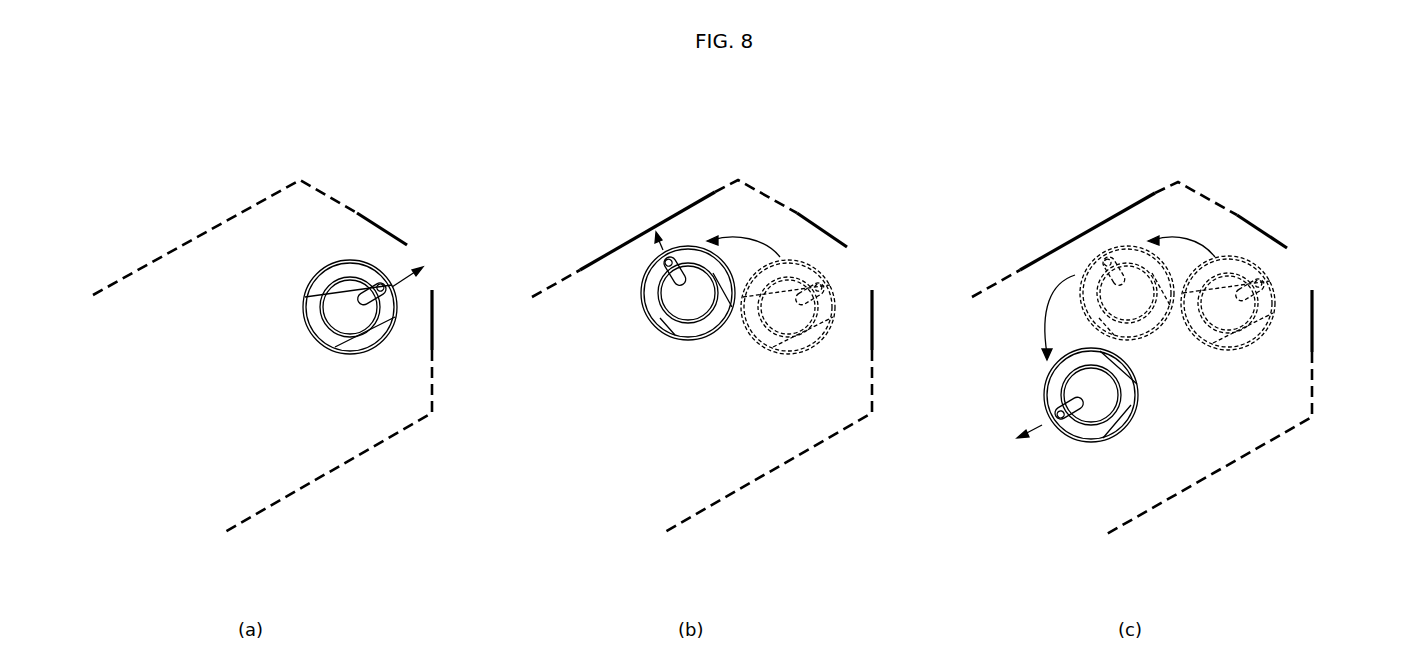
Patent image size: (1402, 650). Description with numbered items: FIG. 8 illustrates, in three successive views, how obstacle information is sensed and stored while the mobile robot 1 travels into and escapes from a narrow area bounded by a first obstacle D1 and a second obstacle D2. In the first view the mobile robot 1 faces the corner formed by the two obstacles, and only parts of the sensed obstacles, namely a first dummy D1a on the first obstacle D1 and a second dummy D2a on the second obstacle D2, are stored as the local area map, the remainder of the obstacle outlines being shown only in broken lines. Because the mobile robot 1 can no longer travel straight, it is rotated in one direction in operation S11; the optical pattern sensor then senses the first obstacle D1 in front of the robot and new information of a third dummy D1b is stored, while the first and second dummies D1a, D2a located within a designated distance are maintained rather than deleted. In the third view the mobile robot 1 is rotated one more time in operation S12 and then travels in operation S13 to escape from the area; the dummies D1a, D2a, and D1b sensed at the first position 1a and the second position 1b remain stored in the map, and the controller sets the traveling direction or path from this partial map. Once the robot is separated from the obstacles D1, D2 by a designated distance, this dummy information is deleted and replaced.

The mobile robot 1 is at (350, 355).
The first position 1a is at (802, 355).
The second position 1b is at (1160, 342).
The first obstacle D1 is at (1193, 188).
The first dummy D1a is at (385, 232).
The third dummy D1b is at (657, 222).
The second obstacle D2 is at (1313, 373).
The second dummy D2a is at (433, 323).
The operation of rotating in one direction S11 is at (961, 239).
The operation of rotating one more time S12 is at (1041, 317).
The operation of traveling S13 is at (1020, 424).